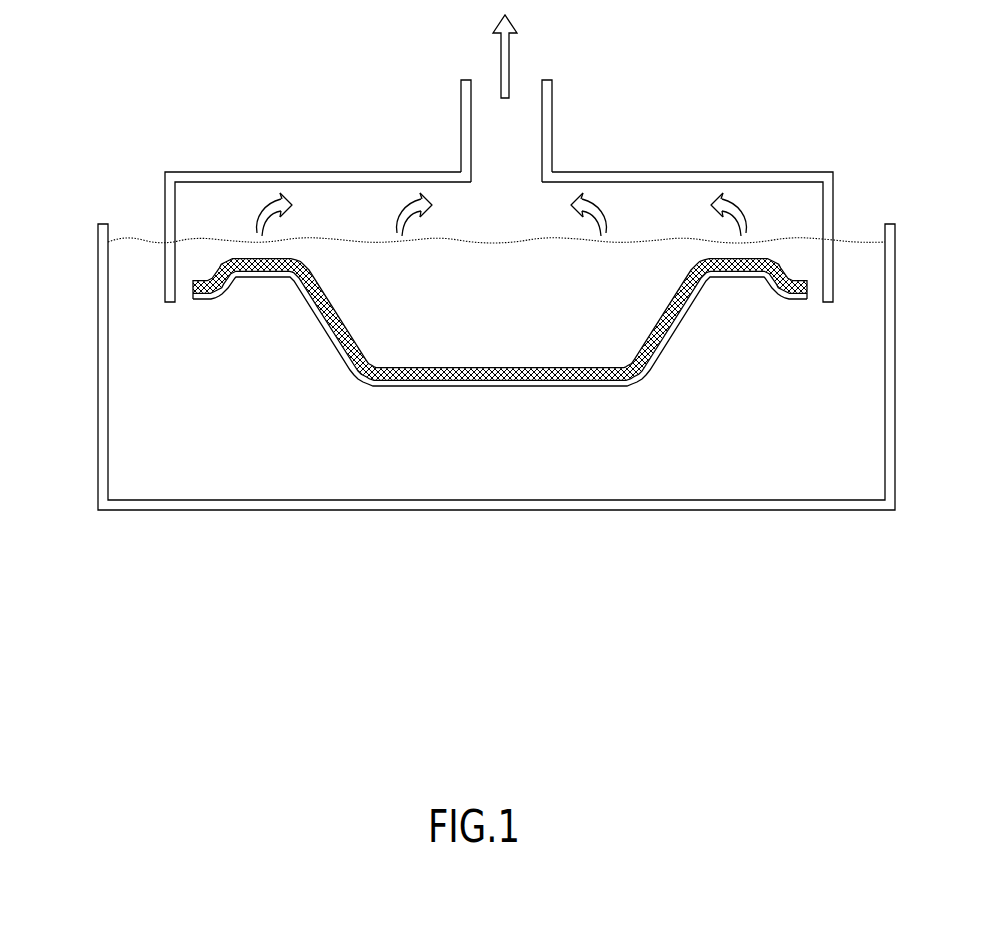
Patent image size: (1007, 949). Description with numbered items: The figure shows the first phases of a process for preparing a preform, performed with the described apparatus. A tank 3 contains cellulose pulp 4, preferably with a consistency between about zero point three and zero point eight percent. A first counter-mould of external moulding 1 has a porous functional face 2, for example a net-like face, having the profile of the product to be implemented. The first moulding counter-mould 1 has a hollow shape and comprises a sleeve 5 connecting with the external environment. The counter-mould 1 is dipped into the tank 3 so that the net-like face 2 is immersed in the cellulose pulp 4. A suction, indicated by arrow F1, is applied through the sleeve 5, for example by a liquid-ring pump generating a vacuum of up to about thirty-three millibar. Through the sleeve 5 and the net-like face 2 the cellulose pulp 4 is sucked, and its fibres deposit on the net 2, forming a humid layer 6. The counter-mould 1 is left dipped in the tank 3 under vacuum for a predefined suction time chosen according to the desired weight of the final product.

The first counter-mould of external moulding 1 is at (238, 172).
The porous functional face 2 is at (667, 350).
The tank 3 is at (98, 437).
The cellulose pulp 4 is at (511, 456).
The sleeve 5 is at (547, 150).
The humid layer 6 is at (323, 338).
The arrow indicating suction F1 is at (523, 55).